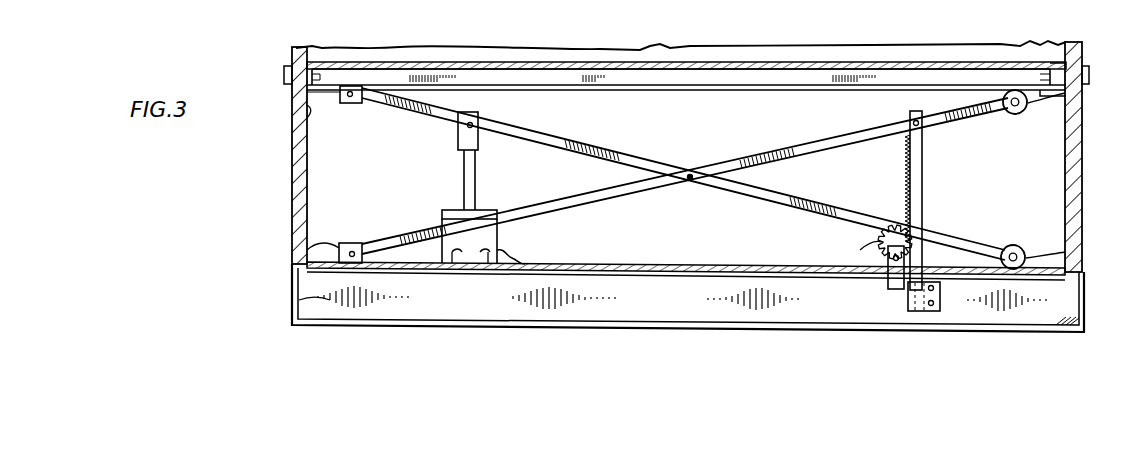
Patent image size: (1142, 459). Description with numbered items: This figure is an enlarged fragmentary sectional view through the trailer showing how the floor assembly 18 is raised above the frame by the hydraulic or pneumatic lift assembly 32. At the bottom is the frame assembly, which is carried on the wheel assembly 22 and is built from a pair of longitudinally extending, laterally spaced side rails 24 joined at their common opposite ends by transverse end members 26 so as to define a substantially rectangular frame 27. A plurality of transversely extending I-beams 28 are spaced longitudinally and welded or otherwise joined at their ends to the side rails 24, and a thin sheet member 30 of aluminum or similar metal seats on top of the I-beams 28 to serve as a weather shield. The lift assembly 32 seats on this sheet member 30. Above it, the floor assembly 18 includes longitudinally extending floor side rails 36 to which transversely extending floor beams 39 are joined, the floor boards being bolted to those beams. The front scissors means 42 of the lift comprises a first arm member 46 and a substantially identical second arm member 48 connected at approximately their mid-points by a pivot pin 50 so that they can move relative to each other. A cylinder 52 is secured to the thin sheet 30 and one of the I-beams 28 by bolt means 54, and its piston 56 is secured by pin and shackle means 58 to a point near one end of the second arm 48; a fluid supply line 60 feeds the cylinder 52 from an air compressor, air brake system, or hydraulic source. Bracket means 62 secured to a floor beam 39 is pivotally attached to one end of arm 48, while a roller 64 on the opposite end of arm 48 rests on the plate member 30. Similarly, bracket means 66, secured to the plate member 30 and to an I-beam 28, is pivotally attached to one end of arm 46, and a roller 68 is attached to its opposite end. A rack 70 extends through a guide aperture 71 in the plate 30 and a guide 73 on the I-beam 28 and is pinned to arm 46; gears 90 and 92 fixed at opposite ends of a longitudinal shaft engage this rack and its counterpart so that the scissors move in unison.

The floor assembly 18 is at (1022, 56).
The wheel assembly 22 is at (608, 0).
The side rails 24 is at (292, 280).
The transverse end members 26 is at (247, 134).
The rectangular frame 27 is at (802, 335).
The I-beams 28 is at (270, 314).
The thin sheet member 30 is at (1045, 150).
The lift assembly 32 is at (278, 0).
The floor side rails 36 is at (300, 112).
The floor beams 39 is at (728, 89).
The front scissors means 42 is at (650, 204).
The first arm member 46 is at (588, 222).
The second arm member 48 is at (560, 145).
The pivot pin 50 is at (690, 182).
The cylinder 52 is at (444, 218).
The bolt means 54 is at (490, 262).
The piston 56 is at (462, 178).
The pin and shackle means 58 is at (457, 138).
The fluid supply line 60 is at (512, 268).
The bracket means 62 is at (350, 90).
The roller 64 is at (1048, 260).
The bracket means 66 is at (300, 260).
The roller 68 is at (1083, 114).
The rack 70 is at (925, 192).
The guide aperture 71 is at (903, 205).
The guide 73 is at (935, 293).
The gear 90 is at (887, 284).
The gear 92 is at (880, 242).